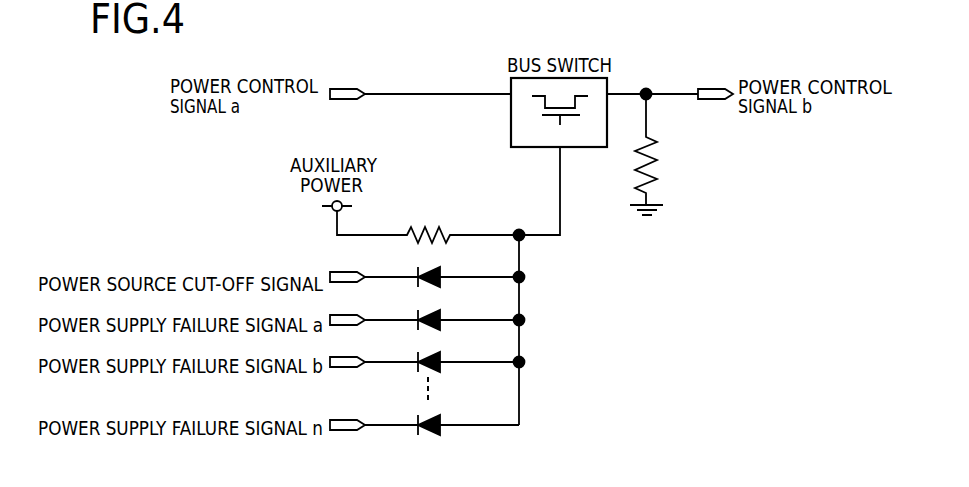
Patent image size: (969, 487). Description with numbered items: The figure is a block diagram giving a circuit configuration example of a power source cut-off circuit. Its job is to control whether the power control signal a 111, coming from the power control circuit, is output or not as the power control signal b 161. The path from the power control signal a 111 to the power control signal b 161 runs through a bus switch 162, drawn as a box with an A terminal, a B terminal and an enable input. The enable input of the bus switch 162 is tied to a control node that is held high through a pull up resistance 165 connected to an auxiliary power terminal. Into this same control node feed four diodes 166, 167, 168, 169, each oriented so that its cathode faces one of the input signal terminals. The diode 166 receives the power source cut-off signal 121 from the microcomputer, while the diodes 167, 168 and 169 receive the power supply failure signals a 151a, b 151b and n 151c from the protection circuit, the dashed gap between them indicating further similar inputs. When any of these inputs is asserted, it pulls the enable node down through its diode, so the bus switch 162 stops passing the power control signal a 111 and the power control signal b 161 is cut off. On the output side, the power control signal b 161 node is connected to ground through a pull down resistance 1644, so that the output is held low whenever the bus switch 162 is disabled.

The power control signal a 111 is at (457, 94).
The power control signal b 161 is at (688, 94).
The bus switch 162 is at (591, 147).
The pull-down resistor 1644 is at (658, 168).
The pull up resistance 165 is at (428, 227).
The diode 166 is at (441, 281).
The diode 167 is at (441, 324).
The diode 168 is at (441, 366).
The diode 169 is at (441, 429).
The power source cut-off signal 121 is at (372, 279).
The power supply failure signal a 151a is at (372, 322).
The power supply failure signal b 151b is at (372, 364).
The power supply failure signal n 151c is at (372, 427).